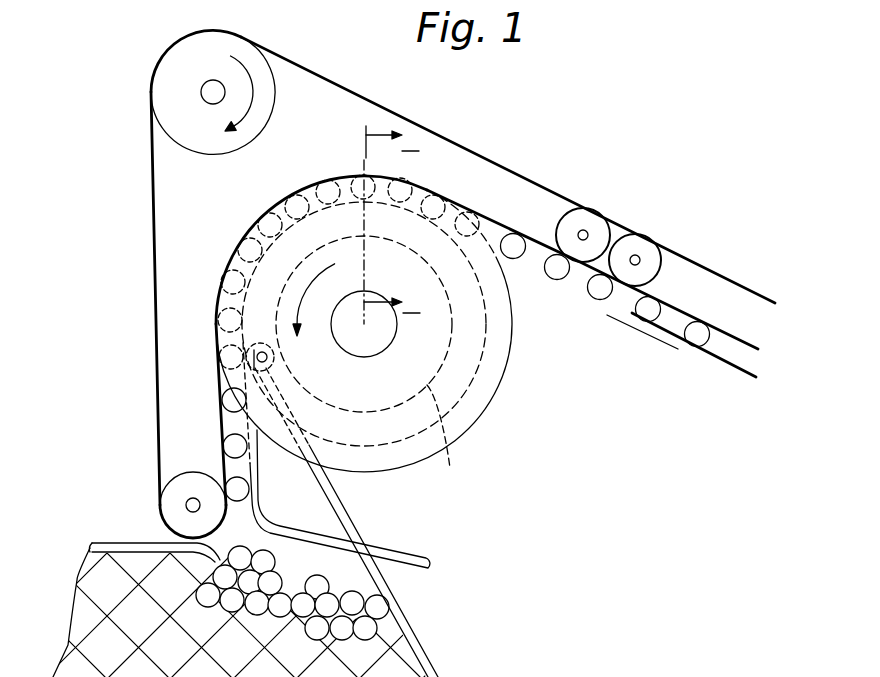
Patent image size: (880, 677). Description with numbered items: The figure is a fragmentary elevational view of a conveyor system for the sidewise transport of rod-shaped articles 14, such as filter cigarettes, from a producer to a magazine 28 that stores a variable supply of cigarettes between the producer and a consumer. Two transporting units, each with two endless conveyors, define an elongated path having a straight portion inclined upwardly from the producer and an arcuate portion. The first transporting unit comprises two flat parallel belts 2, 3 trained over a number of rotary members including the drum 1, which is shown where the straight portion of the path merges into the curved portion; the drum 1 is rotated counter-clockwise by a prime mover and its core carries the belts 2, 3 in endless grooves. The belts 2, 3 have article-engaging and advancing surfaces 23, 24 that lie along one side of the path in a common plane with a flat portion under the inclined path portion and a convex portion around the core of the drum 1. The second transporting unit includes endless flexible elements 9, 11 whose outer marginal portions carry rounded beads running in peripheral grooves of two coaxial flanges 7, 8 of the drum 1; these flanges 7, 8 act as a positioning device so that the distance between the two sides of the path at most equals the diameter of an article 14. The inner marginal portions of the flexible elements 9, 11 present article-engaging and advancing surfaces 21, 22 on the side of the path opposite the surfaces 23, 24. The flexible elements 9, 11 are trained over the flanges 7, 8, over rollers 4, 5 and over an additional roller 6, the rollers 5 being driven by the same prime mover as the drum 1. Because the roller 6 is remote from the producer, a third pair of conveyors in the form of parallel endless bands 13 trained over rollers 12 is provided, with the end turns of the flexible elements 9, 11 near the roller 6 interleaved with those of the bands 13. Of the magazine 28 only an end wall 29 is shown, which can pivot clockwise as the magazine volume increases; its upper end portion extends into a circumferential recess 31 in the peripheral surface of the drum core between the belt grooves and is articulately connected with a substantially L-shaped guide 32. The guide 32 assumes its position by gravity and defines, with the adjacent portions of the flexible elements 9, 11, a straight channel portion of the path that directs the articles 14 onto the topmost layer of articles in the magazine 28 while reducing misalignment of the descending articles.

The drum 1 is at (470, 341).
The belt 2 is at (694, 358).
The belt 3 is at (718, 362).
The roller 4 is at (170, 510).
The roller 5 is at (230, 42).
The additional roller 6 is at (640, 243).
The flange 7 is at (390, 331).
The flange 8 is at (490, 395).
The endless flexible element 9 is at (205, 422).
The endless flexible element 11 is at (220, 386).
The roller 12 is at (588, 220).
The endless band 13 is at (668, 304).
The rod-shaped article 14 is at (512, 233).
The article-engaging and advancing surface 21 is at (289, 284).
The article-engaging and advancing surface 22 is at (234, 292).
The article-engaging and advancing surface 23 is at (688, 279).
The article-engaging and advancing surface 24 is at (634, 298).
The magazine 28 is at (95, 532).
The end wall 29 is at (340, 504).
The circumferential recess 31 is at (450, 468).
The L-shaped guide 32 is at (262, 519).